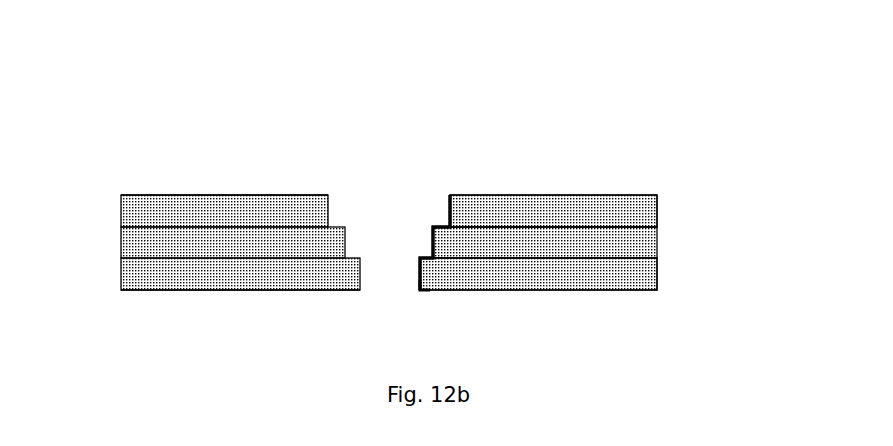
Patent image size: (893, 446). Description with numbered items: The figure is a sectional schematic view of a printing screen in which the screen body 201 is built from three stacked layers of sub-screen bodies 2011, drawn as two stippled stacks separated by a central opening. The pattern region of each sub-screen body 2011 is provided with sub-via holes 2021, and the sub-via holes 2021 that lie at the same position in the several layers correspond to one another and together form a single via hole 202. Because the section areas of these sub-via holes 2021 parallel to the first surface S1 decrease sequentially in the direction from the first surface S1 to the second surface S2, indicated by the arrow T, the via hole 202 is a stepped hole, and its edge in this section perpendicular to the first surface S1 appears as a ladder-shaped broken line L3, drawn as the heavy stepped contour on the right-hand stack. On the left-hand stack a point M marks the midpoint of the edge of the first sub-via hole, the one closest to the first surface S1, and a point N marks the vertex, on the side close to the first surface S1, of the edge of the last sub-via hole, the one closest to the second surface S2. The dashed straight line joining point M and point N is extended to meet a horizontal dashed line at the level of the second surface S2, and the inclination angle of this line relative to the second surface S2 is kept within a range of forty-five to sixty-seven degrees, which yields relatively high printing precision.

The screen body 201 is at (750, 190).
The sub-screen body 2011 is at (648, 203).
The via hole 202 is at (562, 127).
The sub-via hole 2021 is at (368, 210).
The broken line L3 is at (423, 291).
The first surface S1 is at (174, 194).
The second surface S2 is at (162, 293).
The arrow T is at (28, 153).
The point M is at (345, 235).
The point N is at (381, 290).